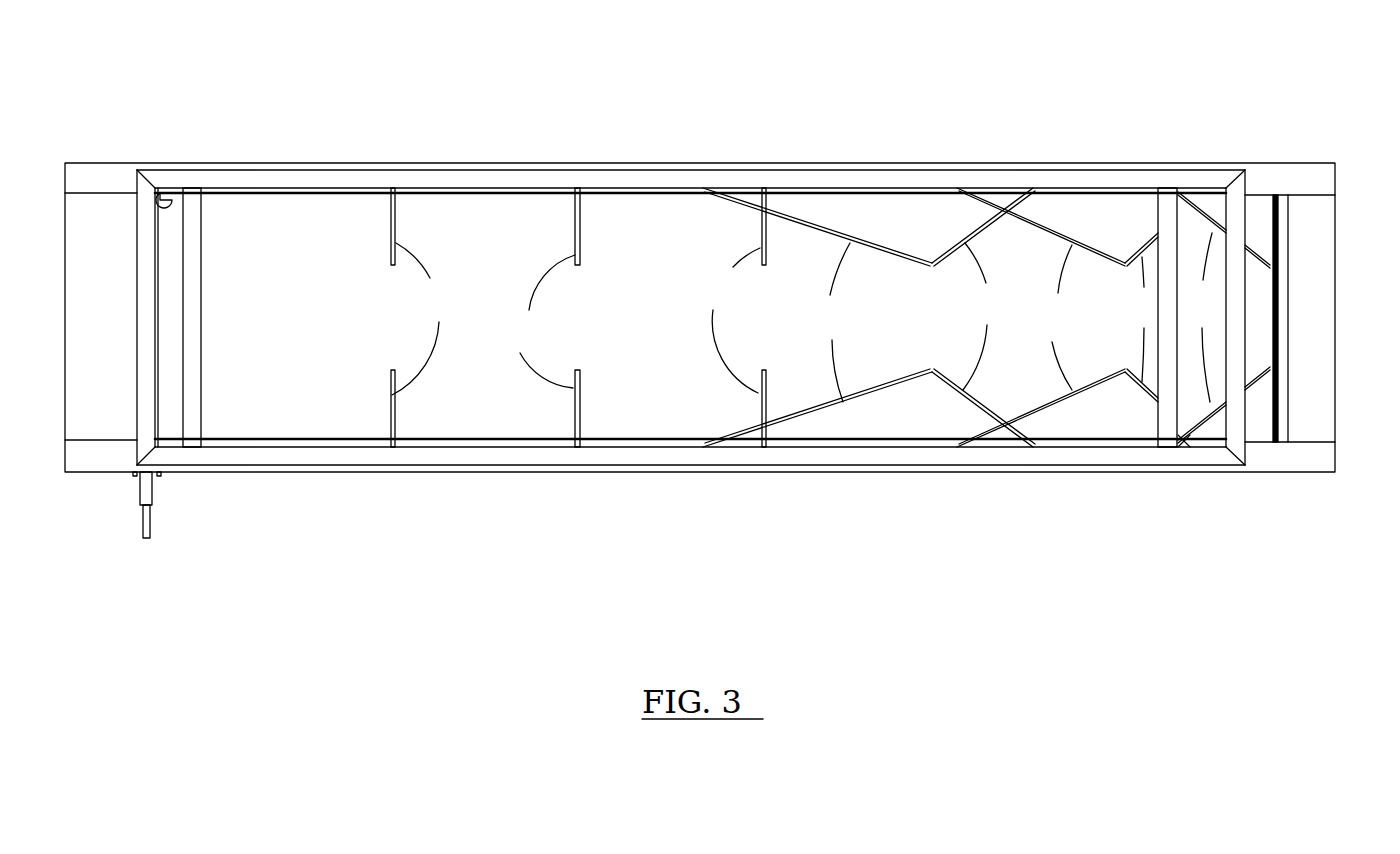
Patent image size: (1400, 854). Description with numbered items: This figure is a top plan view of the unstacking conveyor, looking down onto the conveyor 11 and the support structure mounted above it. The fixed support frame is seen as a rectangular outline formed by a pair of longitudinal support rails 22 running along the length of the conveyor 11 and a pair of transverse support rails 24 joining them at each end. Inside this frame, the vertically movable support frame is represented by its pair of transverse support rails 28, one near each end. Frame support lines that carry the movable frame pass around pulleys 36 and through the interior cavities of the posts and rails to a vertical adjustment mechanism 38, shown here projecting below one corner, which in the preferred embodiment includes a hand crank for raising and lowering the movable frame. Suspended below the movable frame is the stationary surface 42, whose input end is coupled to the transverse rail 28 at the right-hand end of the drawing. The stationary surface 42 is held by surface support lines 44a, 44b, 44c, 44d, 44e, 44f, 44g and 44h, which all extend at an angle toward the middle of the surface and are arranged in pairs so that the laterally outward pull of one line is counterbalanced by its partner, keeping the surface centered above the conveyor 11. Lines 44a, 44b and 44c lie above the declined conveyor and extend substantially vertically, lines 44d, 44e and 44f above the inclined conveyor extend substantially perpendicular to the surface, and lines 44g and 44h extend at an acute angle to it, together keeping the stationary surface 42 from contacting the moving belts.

The conveyor 11 is at (1303, 460).
The longitudinal support rails 22 is at (643, 178).
The transverse support rails 24 is at (147, 198).
The transverse support rails 28 is at (197, 297).
The pulleys 36 is at (160, 190).
The vertical adjustment mechanism 38 is at (146, 487).
The stationary surface 42 is at (1278, 305).
The surface support line 44a is at (428, 317).
The surface support line 44b is at (534, 317).
The surface support line 44c is at (727, 317).
The surface support line 44d is at (817, 317).
The surface support line 44e is at (1041, 317).
The surface support line 44f is at (1224, 319).
The surface support line 44g is at (983, 317).
The surface support line 44h is at (1131, 317).